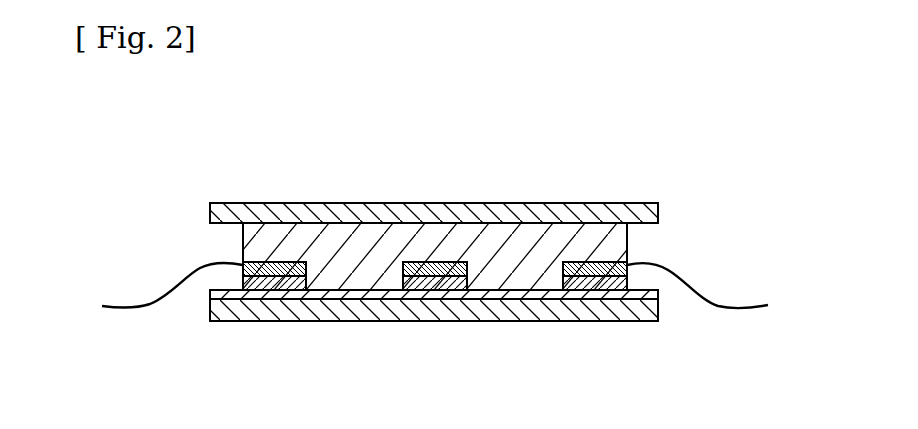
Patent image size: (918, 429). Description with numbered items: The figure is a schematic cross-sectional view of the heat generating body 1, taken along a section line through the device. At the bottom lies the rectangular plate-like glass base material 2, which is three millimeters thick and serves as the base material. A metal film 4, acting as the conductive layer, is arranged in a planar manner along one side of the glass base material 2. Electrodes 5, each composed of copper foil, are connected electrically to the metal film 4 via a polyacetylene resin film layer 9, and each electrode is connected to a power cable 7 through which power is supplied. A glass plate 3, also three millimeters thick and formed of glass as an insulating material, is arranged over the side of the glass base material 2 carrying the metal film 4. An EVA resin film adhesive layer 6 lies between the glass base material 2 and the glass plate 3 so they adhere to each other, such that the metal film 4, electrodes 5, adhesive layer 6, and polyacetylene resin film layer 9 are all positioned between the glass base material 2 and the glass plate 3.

The heat generating body 1 is at (678, 137).
The glass base material 2 is at (350, 321).
The glass plate 3 is at (550, 203).
The metal film 4 is at (210, 296).
The electrodes 5 is at (243, 268).
The EVA resin film adhesive layer 6 is at (355, 258).
The power cable 7 is at (167, 290).
The polyacetylene resin film layer 9 is at (277, 284).